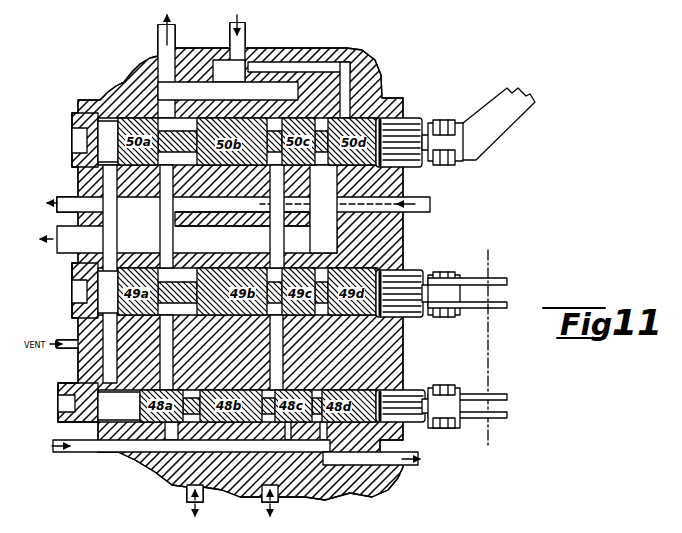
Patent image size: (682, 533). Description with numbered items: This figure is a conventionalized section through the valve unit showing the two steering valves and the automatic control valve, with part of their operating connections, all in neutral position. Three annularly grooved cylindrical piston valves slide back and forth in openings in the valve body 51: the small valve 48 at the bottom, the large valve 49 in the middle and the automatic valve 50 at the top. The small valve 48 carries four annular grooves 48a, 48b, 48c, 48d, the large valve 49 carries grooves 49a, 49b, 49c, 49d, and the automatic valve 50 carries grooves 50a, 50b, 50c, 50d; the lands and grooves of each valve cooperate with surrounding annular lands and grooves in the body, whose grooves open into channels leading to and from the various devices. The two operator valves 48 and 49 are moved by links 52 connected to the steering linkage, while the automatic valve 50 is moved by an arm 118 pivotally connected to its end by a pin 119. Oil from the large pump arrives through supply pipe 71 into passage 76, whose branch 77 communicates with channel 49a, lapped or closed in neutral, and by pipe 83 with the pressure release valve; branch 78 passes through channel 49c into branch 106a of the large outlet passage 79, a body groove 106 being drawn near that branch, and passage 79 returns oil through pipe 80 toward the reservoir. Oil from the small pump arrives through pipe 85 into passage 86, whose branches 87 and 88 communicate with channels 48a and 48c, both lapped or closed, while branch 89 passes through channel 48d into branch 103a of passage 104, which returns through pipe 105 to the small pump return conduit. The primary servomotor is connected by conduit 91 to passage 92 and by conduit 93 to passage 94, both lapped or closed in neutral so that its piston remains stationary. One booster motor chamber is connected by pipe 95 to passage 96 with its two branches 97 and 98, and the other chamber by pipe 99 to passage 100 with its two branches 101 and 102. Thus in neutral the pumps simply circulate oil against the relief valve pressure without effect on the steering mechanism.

The small valve 48 is at (279, 396).
The annular groove of valve 48 48a is at (161, 406).
The annular groove of valve 48 48b is at (231, 406).
The annular groove of valve 48 48c is at (293, 406).
The annular groove of valve 48 48d is at (349, 406).
The large valve 49 is at (279, 278).
The annular groove of valve 49 49a is at (138, 291).
The annular groove of valve 49 49b is at (232, 291).
The annular groove of valve 49 49c is at (298, 291).
The annular groove of valve 49 49d is at (352, 291).
The automatic valve 50 is at (280, 130).
The annular groove of valve 50 50a is at (138, 141).
The annular groove of valve 50 50b is at (232, 141).
The annular groove of valve 50 50c is at (298, 141).
The annular groove of valve 50 50d is at (352, 141).
The valve body 51 is at (170, 485).
The links 52 is at (507, 280).
The supply pipe 71 is at (430, 210).
The passage 76 is at (392, 197).
The branch 77 is at (168, 217).
The branch 78 is at (337, 222).
The outlet passage 79 is at (197, 239).
The pipe 80 is at (34, 243).
The pipe 83 is at (36, 204).
The pipe 85 is at (60, 455).
The passage 86 is at (107, 447).
The branch 87 is at (150, 455).
The branch 88 is at (289, 440).
The branch 89 is at (324, 440).
The conduit 91 is at (203, 500).
The passage 92 is at (183, 344).
The conduit 93 is at (278, 500).
The passage 94 is at (283, 346).
The pipe 95 is at (158, 42).
The passage 96 is at (165, 88).
The branch 97 is at (162, 180).
The branch 98 is at (293, 107).
The pipe 99 is at (230, 32).
The passage 100 is at (250, 48).
The branch 101 is at (229, 112).
The branch 102 is at (352, 78).
The branch 103a is at (338, 432).
The passage 104 is at (378, 468).
The pipe 105 is at (414, 464).
The port 106 is at (229, 263).
The branch 106a is at (342, 253).
The arm 118 is at (510, 127).
The pin 119 is at (445, 166).